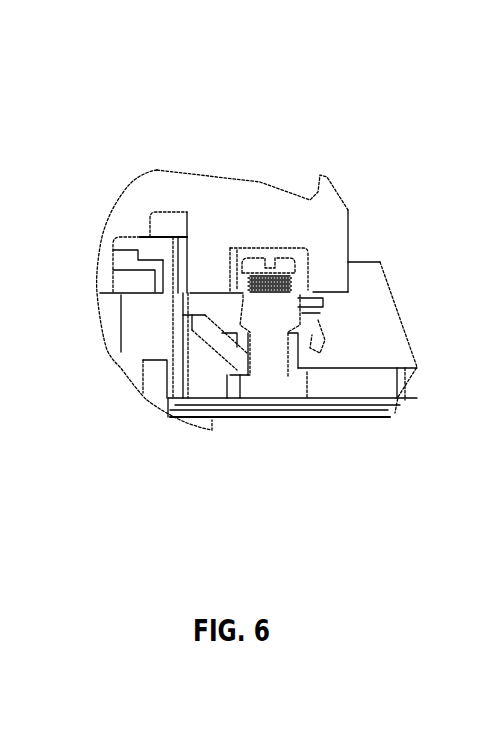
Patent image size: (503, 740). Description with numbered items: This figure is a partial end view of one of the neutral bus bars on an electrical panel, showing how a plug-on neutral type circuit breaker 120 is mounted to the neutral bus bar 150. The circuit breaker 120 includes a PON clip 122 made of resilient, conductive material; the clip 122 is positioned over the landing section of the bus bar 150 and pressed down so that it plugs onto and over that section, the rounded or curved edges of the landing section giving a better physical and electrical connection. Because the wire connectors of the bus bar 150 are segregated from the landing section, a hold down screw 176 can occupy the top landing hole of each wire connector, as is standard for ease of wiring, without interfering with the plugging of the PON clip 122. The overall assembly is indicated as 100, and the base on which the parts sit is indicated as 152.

The assembly 100 is at (345, 101).
The plug-on neutral type circuit breaker 120 is at (197, 190).
The PON clip 122 is at (307, 320).
The hold down screw 176 is at (283, 262).
The neutral bus bar 150 is at (273, 368).
The base plate 152 is at (250, 387).